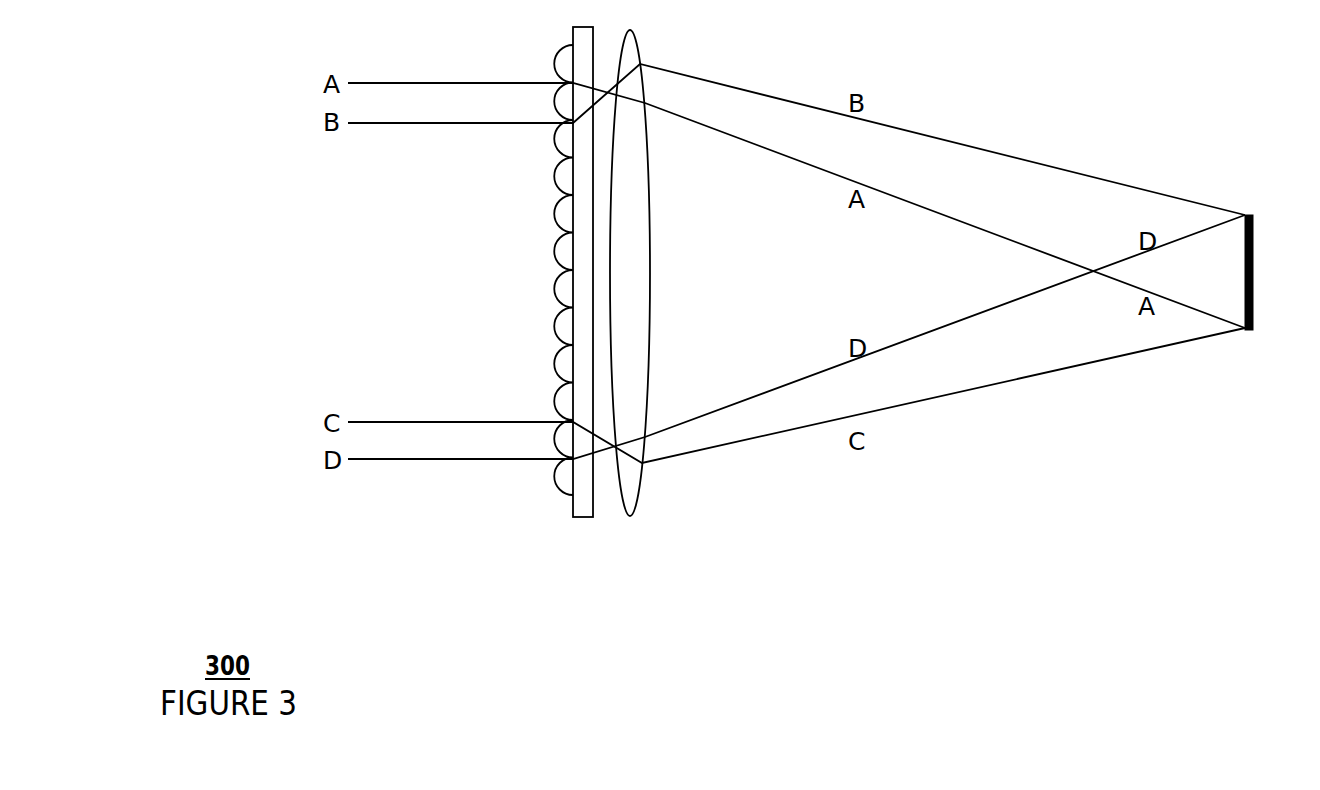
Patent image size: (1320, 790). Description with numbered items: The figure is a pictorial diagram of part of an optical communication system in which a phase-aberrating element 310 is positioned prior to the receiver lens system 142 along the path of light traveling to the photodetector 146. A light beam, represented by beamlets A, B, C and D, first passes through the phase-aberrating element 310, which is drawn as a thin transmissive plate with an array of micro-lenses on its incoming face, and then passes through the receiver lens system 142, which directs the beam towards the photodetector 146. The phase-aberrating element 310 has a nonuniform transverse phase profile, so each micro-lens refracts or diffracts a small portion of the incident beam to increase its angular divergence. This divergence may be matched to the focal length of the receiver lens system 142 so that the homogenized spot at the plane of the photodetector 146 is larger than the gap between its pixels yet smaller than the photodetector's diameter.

The phase-aberrating element 310 is at (587, 518).
The receiver lens system 142 is at (632, 517).
The photodetector 146 is at (1253, 270).